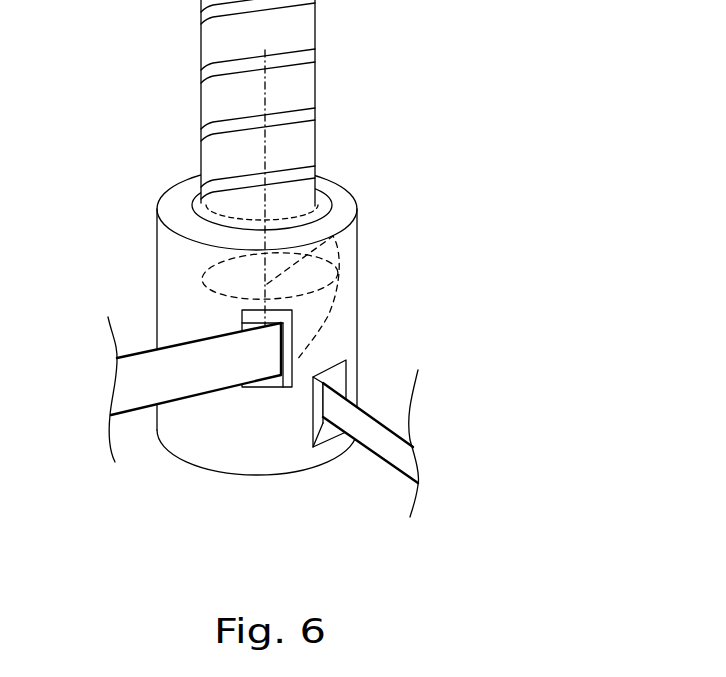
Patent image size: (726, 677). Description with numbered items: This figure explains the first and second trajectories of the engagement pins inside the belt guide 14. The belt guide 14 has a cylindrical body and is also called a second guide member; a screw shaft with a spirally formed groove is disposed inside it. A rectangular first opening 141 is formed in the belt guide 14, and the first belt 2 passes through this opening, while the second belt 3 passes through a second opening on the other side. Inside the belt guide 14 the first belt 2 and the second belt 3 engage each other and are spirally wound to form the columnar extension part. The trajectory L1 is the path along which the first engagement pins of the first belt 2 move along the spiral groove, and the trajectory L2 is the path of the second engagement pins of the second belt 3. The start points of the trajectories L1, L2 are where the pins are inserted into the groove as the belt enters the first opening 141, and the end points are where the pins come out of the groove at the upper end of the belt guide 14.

The belt guide 14 is at (158, 266).
The first opening 141 is at (272, 388).
The first belt 2 is at (137, 412).
The second belt 3 is at (377, 460).
The trajectory L1 is at (337, 262).
The trajectory L2 is at (327, 326).